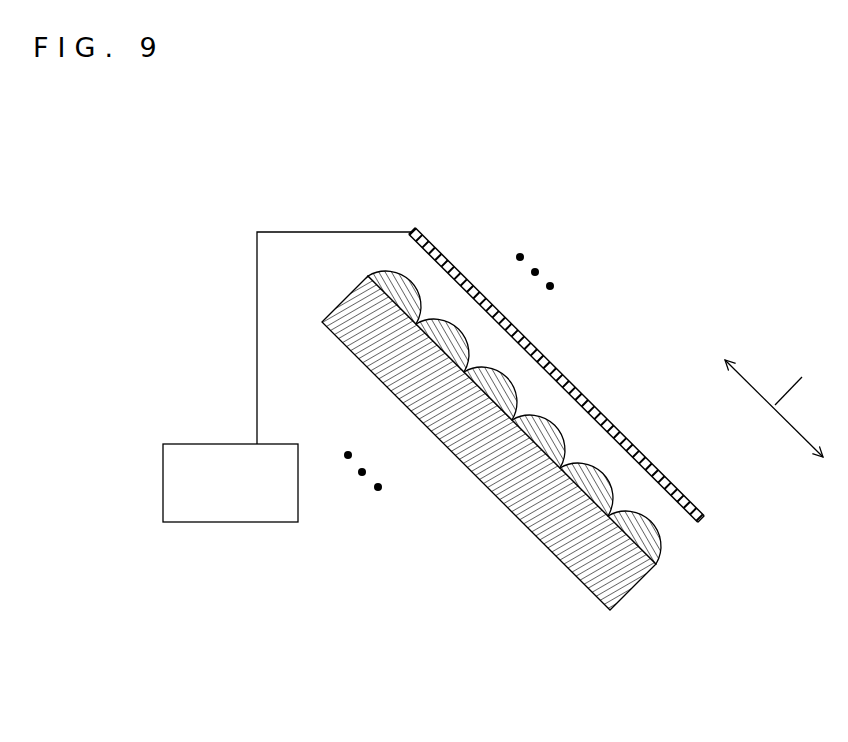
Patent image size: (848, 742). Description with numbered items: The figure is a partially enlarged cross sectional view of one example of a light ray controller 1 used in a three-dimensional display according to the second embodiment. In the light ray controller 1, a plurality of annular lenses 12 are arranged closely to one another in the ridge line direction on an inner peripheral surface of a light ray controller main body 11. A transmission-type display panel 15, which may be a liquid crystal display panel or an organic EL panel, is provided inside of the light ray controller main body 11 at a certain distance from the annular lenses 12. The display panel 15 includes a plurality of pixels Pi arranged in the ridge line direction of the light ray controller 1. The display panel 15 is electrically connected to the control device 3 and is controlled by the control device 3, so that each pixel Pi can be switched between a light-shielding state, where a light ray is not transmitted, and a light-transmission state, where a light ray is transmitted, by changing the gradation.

The light ray controller 1 is at (420, 645).
The control device 3 is at (188, 444).
The light ray controller main body 11 is at (630, 592).
The annular lens 12 is at (492, 498).
The transmission-type display panel 15 is at (703, 519).
The pixel Pi is at (413, 230).